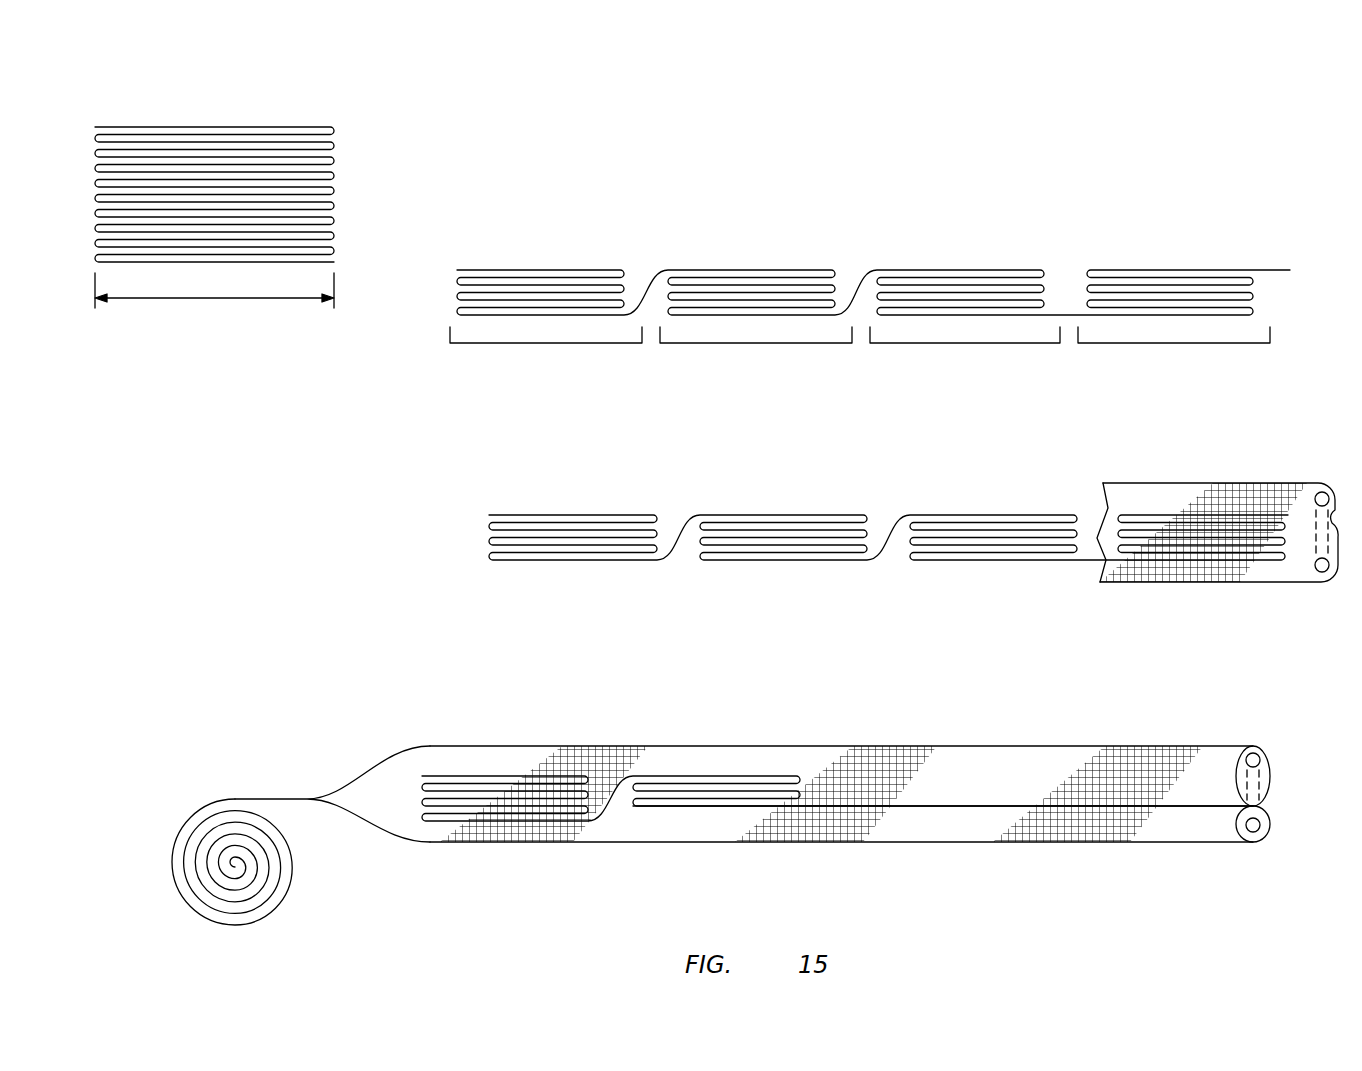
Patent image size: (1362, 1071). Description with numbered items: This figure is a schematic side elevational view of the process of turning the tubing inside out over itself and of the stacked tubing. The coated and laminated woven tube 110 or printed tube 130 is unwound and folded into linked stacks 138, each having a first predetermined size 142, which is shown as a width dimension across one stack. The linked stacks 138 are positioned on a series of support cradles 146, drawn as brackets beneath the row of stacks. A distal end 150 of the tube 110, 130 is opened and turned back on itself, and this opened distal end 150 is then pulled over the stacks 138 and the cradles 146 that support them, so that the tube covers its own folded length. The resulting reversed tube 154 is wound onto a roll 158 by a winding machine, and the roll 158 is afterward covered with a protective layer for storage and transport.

The tube 110 is at (846, 512).
The printed tube 130 is at (1183, 270).
The linked stacks 138 is at (272, 126).
The first predetermined size 142 is at (215, 298).
The support cradles 146 is at (1212, 343).
The distal end 150 is at (1290, 270).
The reversed tube 154 is at (278, 799).
The roll 158 is at (292, 892).